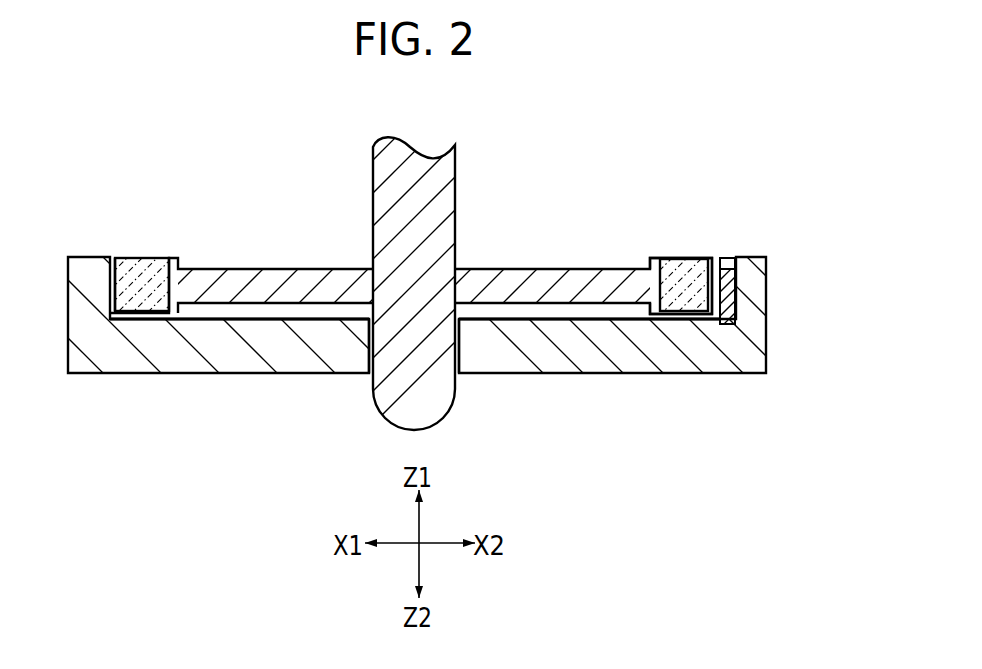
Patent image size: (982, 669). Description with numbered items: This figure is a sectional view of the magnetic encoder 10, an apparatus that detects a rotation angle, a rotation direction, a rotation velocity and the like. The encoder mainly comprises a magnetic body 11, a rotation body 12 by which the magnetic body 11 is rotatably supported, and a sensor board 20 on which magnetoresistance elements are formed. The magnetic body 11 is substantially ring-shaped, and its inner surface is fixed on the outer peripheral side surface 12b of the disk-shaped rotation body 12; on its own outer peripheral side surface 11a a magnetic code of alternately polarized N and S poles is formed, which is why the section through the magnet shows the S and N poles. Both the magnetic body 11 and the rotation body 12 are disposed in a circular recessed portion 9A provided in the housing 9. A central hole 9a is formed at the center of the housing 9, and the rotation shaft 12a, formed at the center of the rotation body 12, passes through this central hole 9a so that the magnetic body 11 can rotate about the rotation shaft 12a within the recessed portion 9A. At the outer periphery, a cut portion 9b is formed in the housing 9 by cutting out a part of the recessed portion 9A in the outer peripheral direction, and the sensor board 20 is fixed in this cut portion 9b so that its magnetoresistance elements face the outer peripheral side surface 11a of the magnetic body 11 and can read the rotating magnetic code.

The housing 9 is at (716, 365).
The central hole 9a is at (459, 376).
The recessed portion 9A is at (573, 324).
The cut portion 9b is at (726, 264).
The magnetic encoder 10 is at (286, 172).
The magnetic body 11 is at (157, 257).
The outer peripheral side surface 11a is at (112, 256).
The rotation body 12 is at (582, 275).
The rotation shaft 12a is at (456, 164).
The outer peripheral side surface 12b is at (666, 258).
The sensor board 20 is at (736, 282).